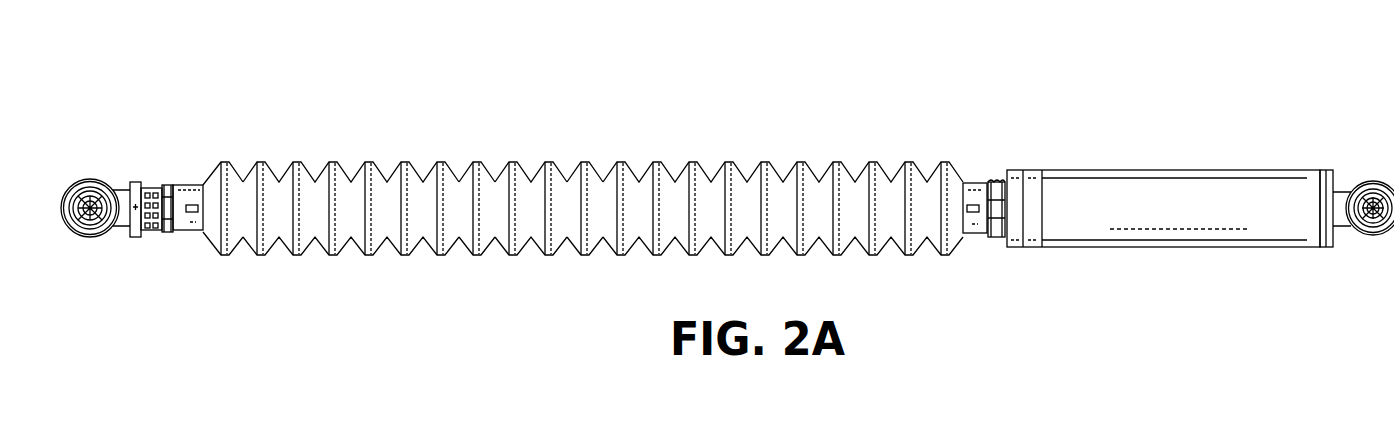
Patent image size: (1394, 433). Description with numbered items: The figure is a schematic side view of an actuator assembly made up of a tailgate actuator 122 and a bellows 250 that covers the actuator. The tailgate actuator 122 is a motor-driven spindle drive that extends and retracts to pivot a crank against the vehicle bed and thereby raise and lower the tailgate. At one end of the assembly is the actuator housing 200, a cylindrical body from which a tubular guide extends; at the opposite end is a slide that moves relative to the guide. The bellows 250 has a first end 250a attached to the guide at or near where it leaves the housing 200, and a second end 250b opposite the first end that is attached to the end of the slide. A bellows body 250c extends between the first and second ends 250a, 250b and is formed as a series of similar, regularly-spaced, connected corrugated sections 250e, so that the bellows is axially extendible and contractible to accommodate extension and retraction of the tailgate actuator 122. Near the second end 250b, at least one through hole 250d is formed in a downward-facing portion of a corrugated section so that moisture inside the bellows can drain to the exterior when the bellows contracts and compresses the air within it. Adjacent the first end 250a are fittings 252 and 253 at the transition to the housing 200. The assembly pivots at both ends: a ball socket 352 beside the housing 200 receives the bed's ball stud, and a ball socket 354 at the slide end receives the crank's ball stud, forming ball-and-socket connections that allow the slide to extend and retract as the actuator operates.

The tailgate actuator 122 is at (1225, 94).
The housing 200 is at (1137, 192).
The bellows 250 is at (706, 173).
The bellows first end 250a is at (975, 185).
The bellows second end 250b is at (193, 183).
The bellows body 250c is at (603, 170).
The through hole 250d is at (213, 210).
The corrugated sections 250e is at (466, 166).
The nut 252 is at (997, 185).
The fitting 253 is at (164, 181).
The ball socket 352 is at (1381, 182).
The ball socket 354 is at (92, 178).